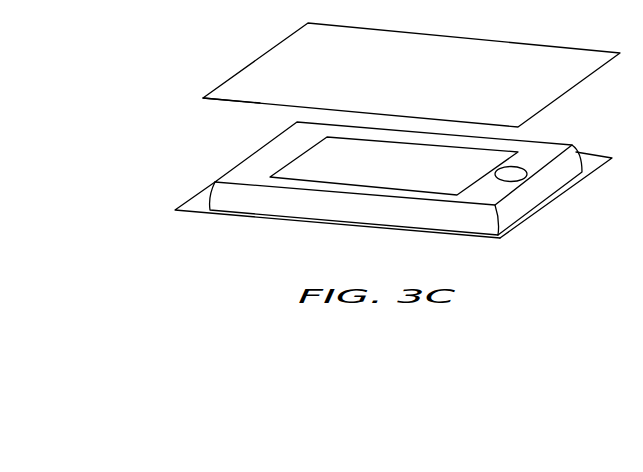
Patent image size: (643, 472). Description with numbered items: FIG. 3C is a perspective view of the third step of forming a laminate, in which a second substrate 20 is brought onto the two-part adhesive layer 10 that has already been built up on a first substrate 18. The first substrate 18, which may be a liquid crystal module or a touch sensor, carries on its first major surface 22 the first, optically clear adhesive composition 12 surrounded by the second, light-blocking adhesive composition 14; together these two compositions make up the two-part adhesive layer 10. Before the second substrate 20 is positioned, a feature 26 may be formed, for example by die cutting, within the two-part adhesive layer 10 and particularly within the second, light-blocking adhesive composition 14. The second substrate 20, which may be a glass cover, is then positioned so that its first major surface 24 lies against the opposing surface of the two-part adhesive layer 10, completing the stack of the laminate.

The two-part adhesive layer 10 is at (576, 118).
The first, optically clear adhesive composition 12 is at (312, 162).
The second, light-blocking adhesive composition 14 is at (257, 202).
The first substrate 18 is at (591, 160).
The second substrate 20 is at (527, 67).
The first major surface of the first substrate 22 is at (190, 192).
The first major surface of the second substrate 24 is at (219, 104).
The feature 26 is at (517, 176).